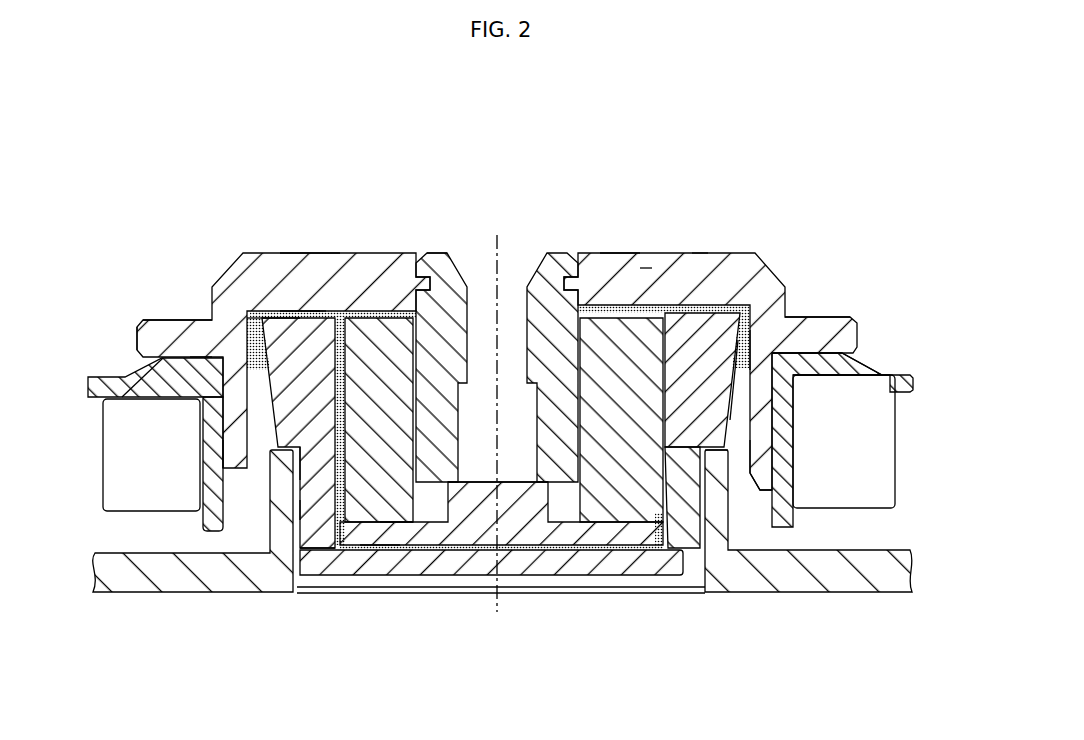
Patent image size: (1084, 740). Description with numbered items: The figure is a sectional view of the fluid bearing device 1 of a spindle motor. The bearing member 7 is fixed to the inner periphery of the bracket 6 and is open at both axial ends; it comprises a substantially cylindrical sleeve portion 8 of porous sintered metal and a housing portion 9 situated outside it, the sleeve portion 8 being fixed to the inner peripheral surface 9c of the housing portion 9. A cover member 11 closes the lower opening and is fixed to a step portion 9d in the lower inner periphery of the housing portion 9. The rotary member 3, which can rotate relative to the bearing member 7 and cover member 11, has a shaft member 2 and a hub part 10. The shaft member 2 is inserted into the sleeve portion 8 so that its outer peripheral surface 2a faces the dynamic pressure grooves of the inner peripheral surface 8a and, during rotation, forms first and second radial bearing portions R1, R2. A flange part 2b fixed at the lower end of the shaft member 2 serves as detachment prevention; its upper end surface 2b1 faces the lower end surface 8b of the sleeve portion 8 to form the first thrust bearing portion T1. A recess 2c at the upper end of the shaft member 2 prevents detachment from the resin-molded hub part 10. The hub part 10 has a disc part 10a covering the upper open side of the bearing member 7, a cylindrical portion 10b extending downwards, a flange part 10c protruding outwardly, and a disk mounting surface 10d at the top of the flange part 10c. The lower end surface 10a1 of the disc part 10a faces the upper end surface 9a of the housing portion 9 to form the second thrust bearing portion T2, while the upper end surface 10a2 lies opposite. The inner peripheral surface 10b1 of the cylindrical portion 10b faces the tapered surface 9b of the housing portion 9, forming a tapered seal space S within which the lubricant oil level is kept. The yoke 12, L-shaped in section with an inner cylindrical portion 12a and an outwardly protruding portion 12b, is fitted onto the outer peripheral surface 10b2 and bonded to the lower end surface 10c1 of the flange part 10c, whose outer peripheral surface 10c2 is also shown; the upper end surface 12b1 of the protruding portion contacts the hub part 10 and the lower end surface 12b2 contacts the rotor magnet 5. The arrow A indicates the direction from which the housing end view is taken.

The fluid bearing device 1 is at (598, 185).
The shaft member 2 is at (572, 392).
The outer peripheral surface 2a is at (612, 515).
The flange part 2b is at (583, 533).
The upper end surface 2b1 is at (392, 527).
The recess 2c is at (439, 262).
The rotary member 3 is at (312, 250).
The rotor magnet 5 is at (137, 505).
The bracket 6 is at (193, 583).
The bearing member 7 is at (706, 600).
The sleeve portion 8 is at (653, 580).
The inner peripheral surface 8a is at (718, 478).
The lower end surface 8b is at (362, 527).
The housing portion 9 is at (293, 385).
The upper end surface 9a is at (284, 308).
The tapered surface 9b is at (748, 432).
The inner peripheral surface 9c is at (303, 461).
The step portion 9d is at (333, 575).
The hub part 10 is at (724, 250).
The disc part 10a is at (646, 268).
The lower end surface 10a1 is at (318, 308).
The upper end surface 10a2 is at (700, 255).
The cylindrical portion 10b is at (760, 472).
The inner peripheral surface 10b1 is at (752, 455).
The outer peripheral surface 10b2 is at (205, 458).
The flange part 10c is at (162, 336).
The lower end surface 10c1 is at (200, 350).
The outer peripheral surface 10c2 is at (138, 333).
The disk mounting surface 10d is at (818, 340).
The cover member 11 is at (483, 570).
The yoke 12 is at (92, 400).
The inner cylindrical portion 12a is at (787, 493).
The outwardly protruding portion 12b is at (863, 375).
The upper end surface 12b1 is at (810, 352).
The lower end surface 12b2 is at (808, 379).
The arrow A is at (333, 180).
The seal space S is at (750, 350).
The first thrust bearing portion T1 is at (375, 530).
The second thrust bearing portion T2 is at (298, 312).
The first radial bearing portion R1 is at (397, 378).
The second radial bearing portion R2 is at (303, 508).